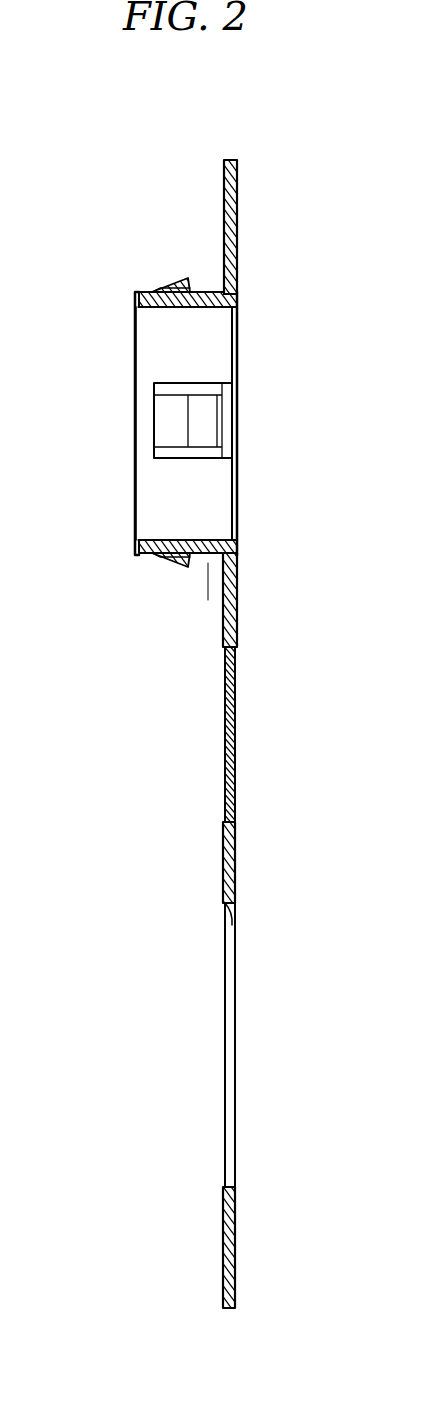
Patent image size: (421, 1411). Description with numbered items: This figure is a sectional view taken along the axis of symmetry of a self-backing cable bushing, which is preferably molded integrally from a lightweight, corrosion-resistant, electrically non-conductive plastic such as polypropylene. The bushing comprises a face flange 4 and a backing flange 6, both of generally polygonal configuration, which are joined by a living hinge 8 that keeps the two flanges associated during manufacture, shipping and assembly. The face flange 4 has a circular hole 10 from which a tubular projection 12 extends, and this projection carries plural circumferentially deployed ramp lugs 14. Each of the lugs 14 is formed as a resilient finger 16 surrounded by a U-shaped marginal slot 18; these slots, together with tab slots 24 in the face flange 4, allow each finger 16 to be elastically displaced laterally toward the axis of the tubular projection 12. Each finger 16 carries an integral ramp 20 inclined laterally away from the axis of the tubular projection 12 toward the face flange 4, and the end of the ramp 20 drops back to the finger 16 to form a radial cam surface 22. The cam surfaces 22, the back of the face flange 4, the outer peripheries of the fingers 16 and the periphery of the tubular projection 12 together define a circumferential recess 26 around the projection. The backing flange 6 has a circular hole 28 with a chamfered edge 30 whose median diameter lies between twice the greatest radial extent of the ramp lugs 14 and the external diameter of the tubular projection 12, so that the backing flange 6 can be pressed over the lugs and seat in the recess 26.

The face flange 4 is at (237, 216).
The backing flange 6 is at (237, 863).
The living hinge 8 is at (237, 733).
The circular hole 10 is at (237, 353).
The tubular projection 12 is at (158, 358).
The ramp lugs 14 is at (157, 290).
The resilient finger 16 is at (174, 306).
The U-shaped marginal slot 18 is at (216, 455).
The ramp 20 is at (172, 290).
The radial cam surface 22 is at (192, 285).
The tab slots 24 is at (237, 279).
The circumferential recess 26 is at (208, 563).
The circular hole 28 is at (237, 1046).
The chamfered edge 30 is at (232, 925).